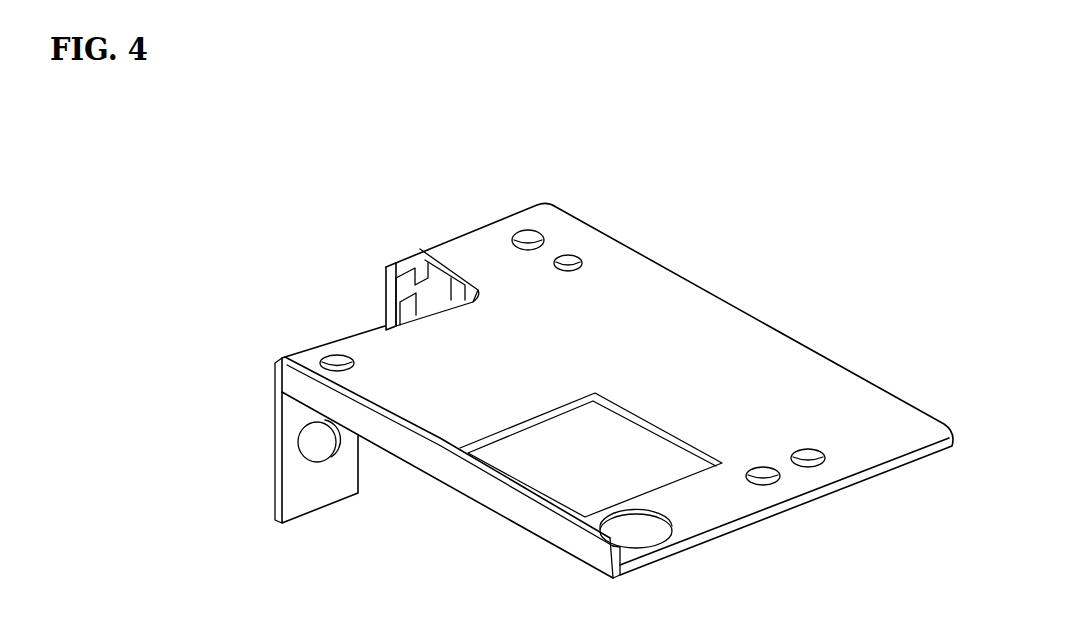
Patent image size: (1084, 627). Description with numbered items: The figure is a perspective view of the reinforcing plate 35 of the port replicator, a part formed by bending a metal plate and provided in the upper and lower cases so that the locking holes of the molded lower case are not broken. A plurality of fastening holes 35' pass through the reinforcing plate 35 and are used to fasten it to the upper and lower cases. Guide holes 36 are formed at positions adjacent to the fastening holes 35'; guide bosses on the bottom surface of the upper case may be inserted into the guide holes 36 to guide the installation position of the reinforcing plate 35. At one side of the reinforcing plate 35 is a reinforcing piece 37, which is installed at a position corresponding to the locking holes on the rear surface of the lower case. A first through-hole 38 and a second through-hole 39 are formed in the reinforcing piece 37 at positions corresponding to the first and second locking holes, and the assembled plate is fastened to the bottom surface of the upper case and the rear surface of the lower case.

The reinforcing plate 35 is at (614, 383).
The fastening holes 35' is at (491, 376).
The guide holes 36 is at (526, 240).
The reinforcing piece 37 is at (385, 287).
The first through-hole 38 is at (410, 288).
The second through-hole 39 is at (463, 284).